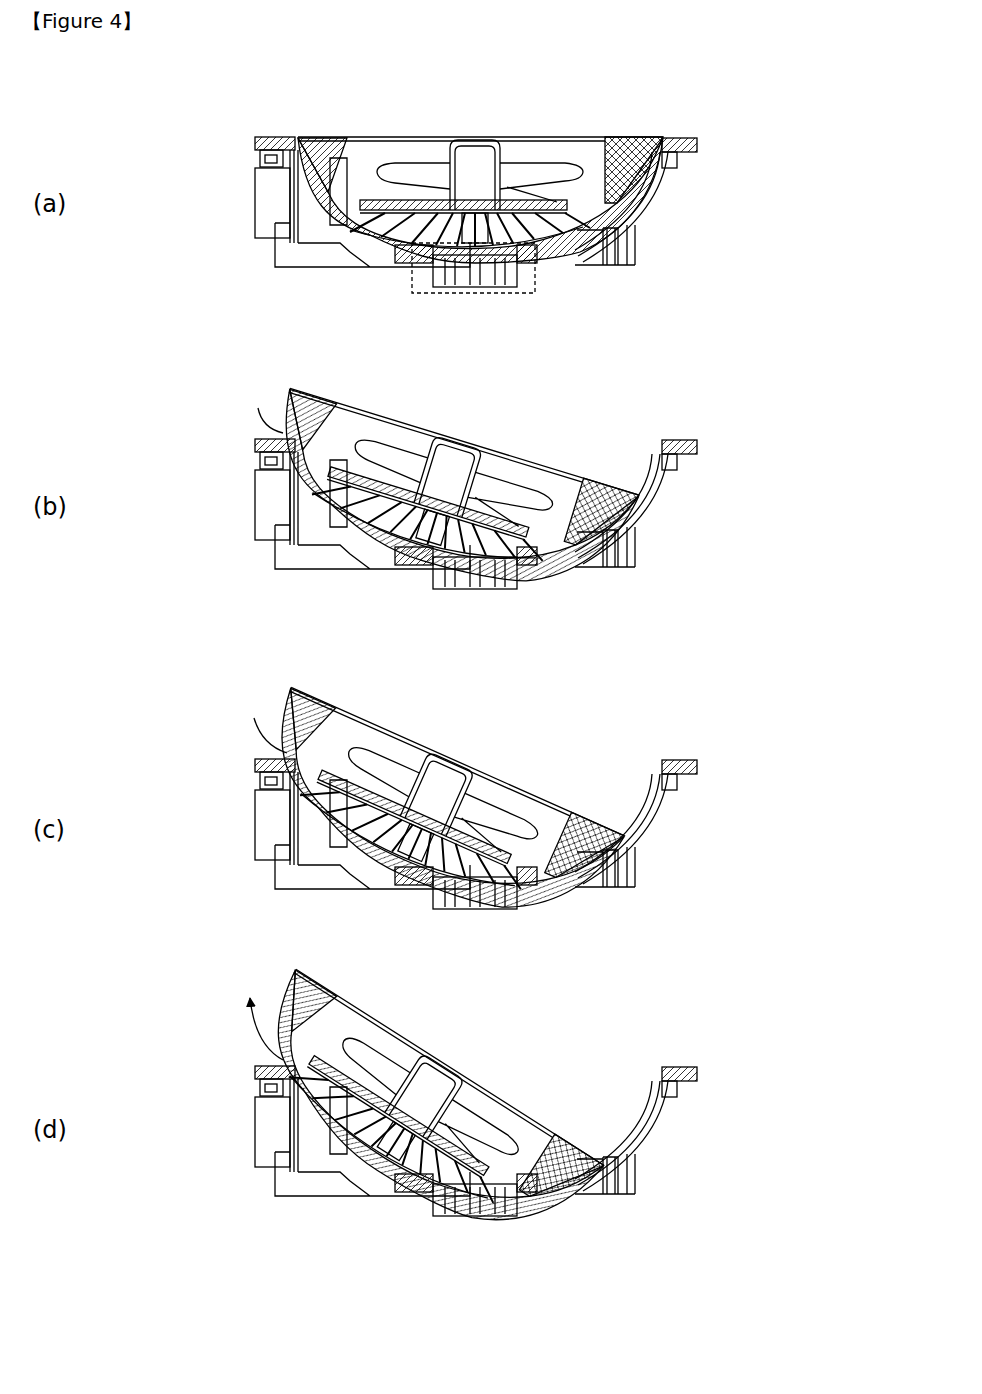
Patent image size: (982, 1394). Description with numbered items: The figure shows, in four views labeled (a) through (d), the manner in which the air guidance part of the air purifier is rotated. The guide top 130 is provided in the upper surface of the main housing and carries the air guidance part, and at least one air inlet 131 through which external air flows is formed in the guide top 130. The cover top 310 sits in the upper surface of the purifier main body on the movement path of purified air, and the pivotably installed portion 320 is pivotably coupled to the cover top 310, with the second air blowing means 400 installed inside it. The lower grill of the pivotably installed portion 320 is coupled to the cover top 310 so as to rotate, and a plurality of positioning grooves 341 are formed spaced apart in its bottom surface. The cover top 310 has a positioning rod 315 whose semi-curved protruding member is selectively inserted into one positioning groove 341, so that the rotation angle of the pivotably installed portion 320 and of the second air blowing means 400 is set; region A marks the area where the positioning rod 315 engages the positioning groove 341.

The guide top 130 is at (660, 195).
The air inlet 131 is at (255, 180).
The cover top 310 is at (685, 130).
The positioning rod 315 is at (433, 273).
The pivotably installed portion 320 is at (628, 135).
The positioning groove 341 is at (565, 260).
The second air blowing means 400 is at (415, 160).
The region A is at (400, 270).